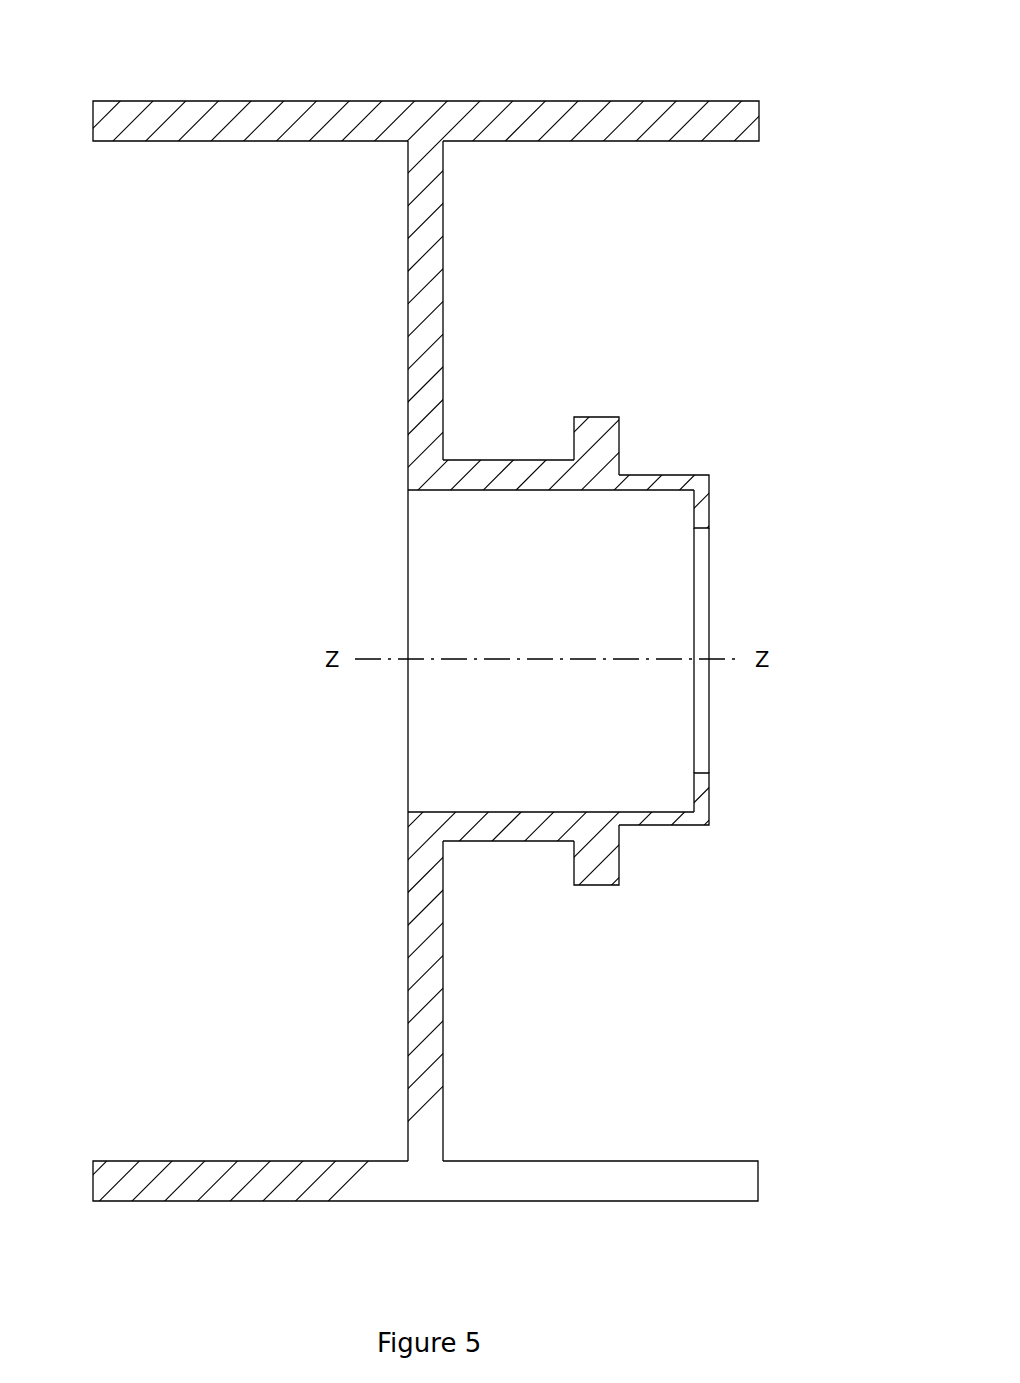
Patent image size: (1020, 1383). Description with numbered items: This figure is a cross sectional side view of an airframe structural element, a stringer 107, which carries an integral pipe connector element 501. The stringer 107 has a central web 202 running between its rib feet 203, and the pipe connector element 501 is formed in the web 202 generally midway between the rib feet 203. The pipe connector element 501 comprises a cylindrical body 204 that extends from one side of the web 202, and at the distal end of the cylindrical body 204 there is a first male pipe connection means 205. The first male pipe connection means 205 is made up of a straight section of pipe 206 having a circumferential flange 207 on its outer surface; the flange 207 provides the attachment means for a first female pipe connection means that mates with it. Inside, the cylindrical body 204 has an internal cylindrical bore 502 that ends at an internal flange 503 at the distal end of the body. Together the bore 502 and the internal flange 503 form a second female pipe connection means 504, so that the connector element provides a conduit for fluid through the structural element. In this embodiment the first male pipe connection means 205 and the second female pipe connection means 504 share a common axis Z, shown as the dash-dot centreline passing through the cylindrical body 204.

The stringer 107 is at (427, 125).
The rib feet 203 is at (200, 102).
The web 202 is at (408, 309).
The pipe connector element 501 is at (488, 475).
The circumferential flange 207 is at (601, 416).
The first male pipe connection means 205 is at (660, 443).
The straight section of pipe 206 is at (687, 822).
The cylindrical body 204 is at (486, 828).
The second female pipe connection means 504 is at (398, 640).
The internal flange 503 is at (694, 515).
The internal cylindrical bore 502 is at (455, 812).